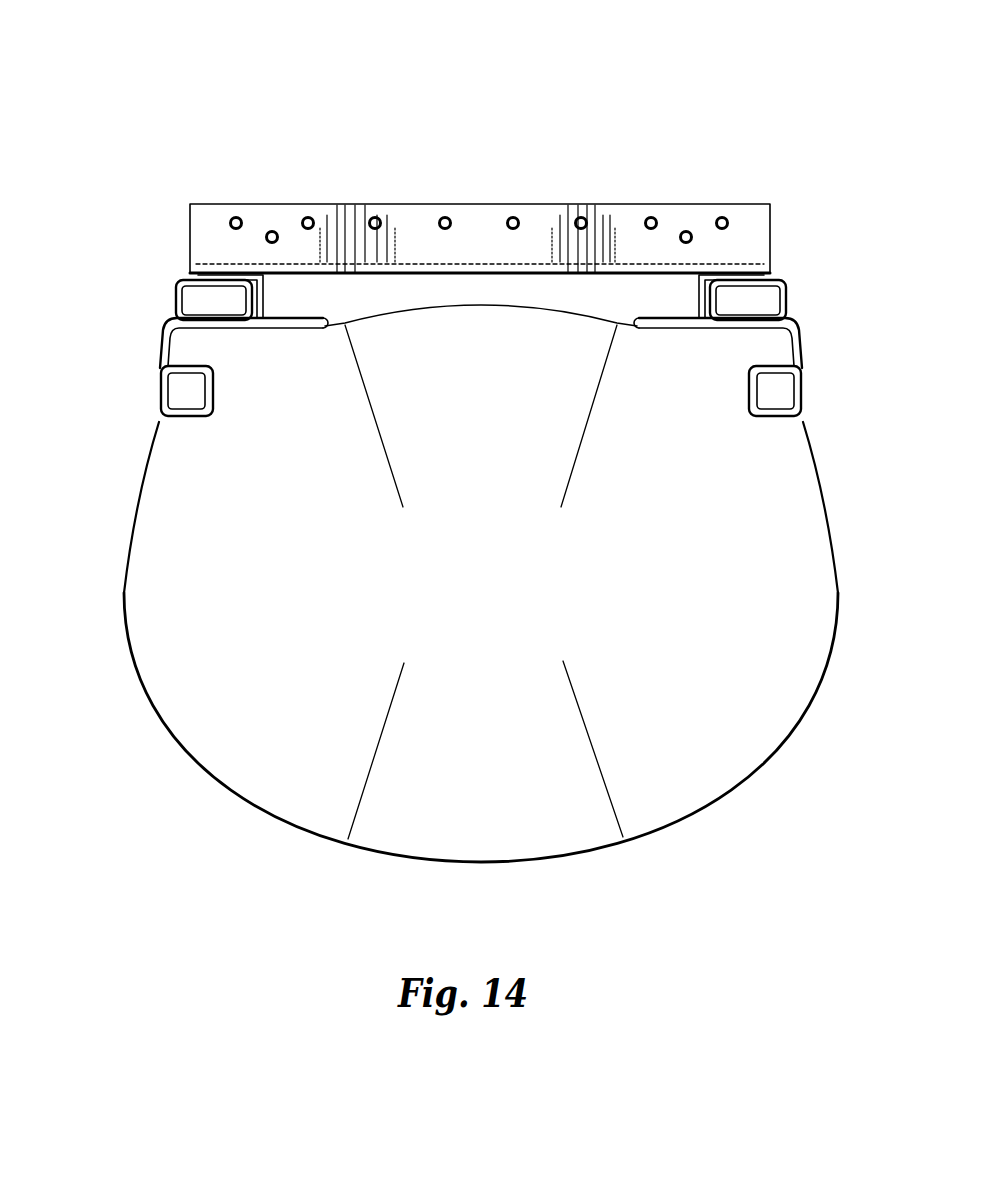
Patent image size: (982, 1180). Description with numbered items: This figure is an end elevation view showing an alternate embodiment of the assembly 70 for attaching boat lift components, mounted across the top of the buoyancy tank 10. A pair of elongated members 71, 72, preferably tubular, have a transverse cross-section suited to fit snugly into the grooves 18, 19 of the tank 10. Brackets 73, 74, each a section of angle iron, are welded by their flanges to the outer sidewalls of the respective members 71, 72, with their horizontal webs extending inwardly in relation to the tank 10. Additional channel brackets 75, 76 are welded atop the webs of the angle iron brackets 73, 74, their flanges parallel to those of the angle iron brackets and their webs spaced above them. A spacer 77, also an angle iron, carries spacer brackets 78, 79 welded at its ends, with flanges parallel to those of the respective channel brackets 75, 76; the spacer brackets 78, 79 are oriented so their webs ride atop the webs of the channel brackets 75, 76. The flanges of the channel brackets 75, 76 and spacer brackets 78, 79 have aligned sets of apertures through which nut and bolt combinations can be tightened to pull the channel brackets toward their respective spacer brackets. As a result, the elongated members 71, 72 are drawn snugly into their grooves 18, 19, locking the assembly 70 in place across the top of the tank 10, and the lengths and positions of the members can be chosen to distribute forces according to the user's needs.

The buoyancy tank 10 is at (456, 610).
The groove 18 is at (213, 393).
The groove 19 is at (748, 388).
The assembly 70 is at (522, 185).
The elongated member 71 is at (188, 397).
The elongated member 72 is at (777, 387).
The bracket 73 is at (167, 352).
The bracket 74 is at (797, 333).
The channel bracket 75 is at (177, 293).
The channel bracket 76 is at (785, 283).
The spacer 77 is at (480, 188).
The spacer bracket 78 is at (265, 298).
The spacer bracket 79 is at (693, 288).